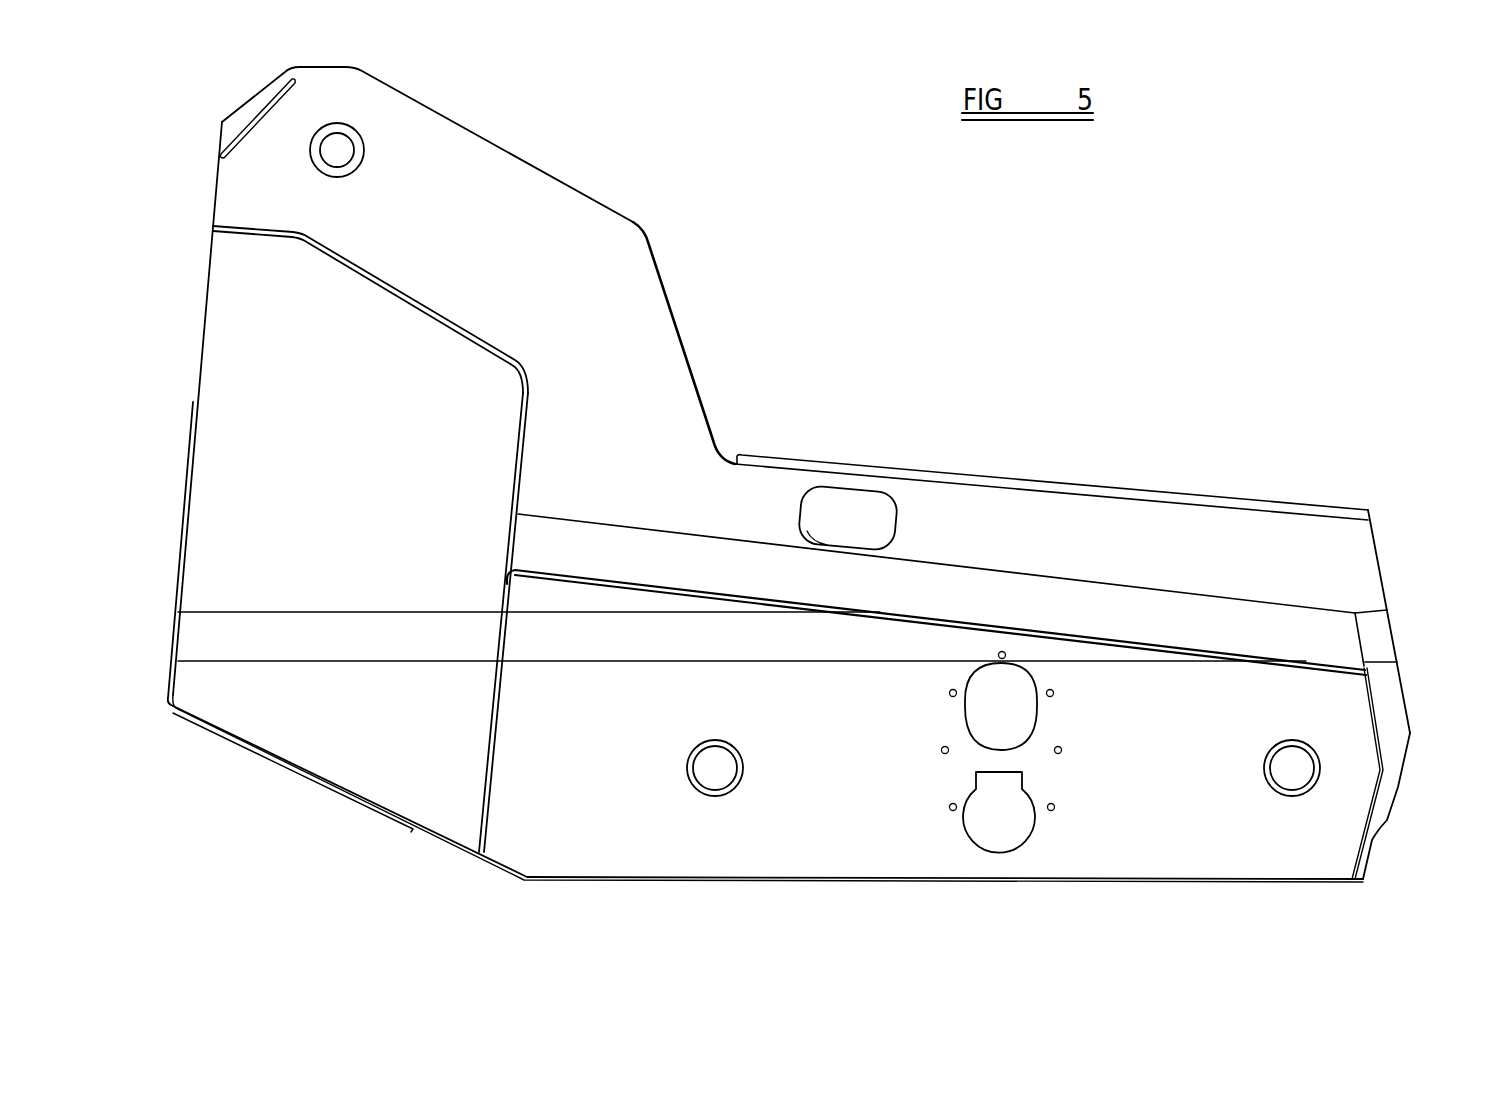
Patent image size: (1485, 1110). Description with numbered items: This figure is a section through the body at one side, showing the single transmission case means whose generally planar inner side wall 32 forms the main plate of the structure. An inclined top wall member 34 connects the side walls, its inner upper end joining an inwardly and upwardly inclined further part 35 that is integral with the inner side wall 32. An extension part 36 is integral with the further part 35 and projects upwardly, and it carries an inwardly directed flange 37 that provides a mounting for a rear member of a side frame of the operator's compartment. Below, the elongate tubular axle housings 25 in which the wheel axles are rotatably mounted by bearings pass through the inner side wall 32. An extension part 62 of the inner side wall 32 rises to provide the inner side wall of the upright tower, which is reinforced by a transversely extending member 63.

The tubular axle housings 25 is at (730, 792).
The inner side wall 32 is at (1393, 783).
The inclined top wall member 34 is at (1313, 633).
The further part 35 is at (1397, 635).
The extension part 36 is at (1387, 580).
The inwardly directed flange 37 is at (1370, 512).
The extension part of the inner wall 62 is at (512, 156).
The transversely extending member 63 is at (470, 334).